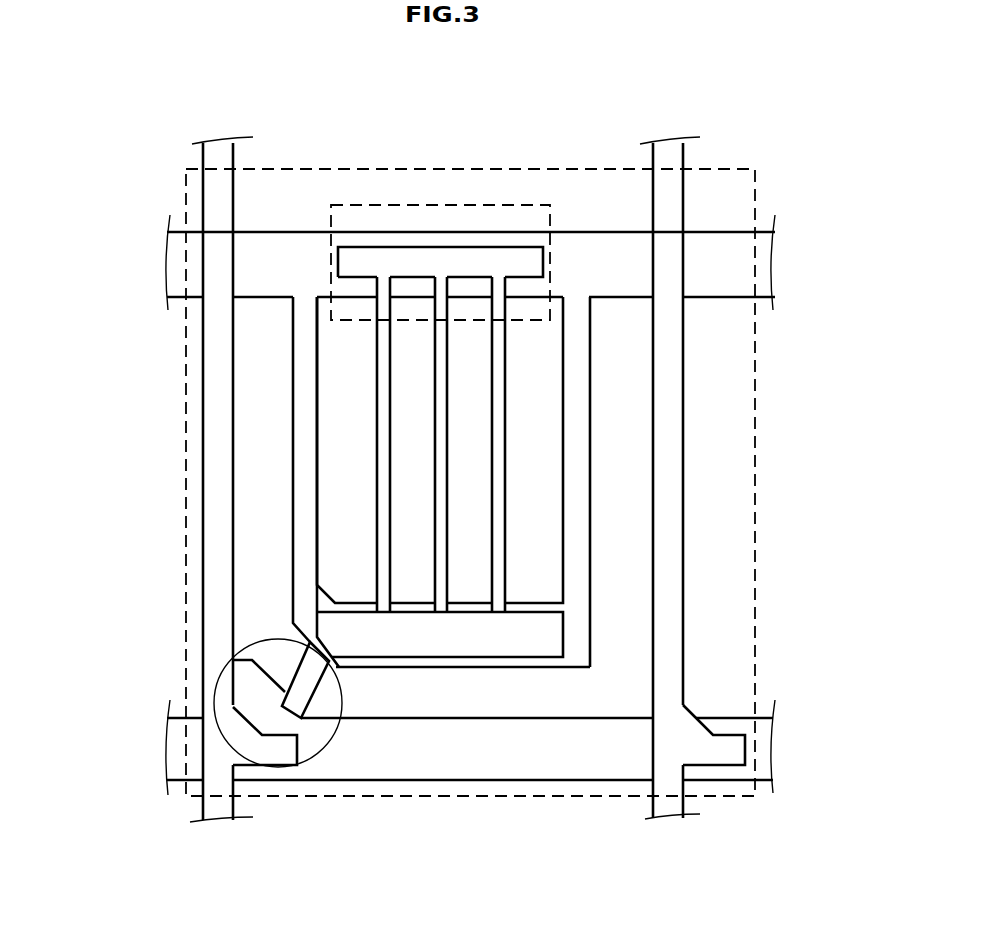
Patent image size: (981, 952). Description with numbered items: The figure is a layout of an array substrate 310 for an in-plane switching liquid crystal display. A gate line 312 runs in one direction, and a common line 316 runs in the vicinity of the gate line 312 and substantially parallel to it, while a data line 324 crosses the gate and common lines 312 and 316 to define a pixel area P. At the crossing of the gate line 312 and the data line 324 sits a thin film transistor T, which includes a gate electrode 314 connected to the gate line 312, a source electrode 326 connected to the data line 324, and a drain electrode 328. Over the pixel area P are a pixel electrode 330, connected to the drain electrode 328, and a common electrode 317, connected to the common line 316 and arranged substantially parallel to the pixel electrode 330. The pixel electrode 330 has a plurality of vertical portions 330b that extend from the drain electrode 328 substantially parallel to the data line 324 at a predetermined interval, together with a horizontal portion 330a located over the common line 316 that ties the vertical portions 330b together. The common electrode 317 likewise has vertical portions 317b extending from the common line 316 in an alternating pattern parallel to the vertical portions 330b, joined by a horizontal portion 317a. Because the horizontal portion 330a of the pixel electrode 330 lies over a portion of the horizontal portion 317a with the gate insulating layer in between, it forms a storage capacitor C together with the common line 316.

The array substrate 310 is at (755, 392).
The gate line 312 is at (530, 763).
The gate electrode 314 is at (243, 685).
The common line 316 is at (740, 263).
The common electrode 317 is at (627, 484).
The horizontal portion of common electrode 317a is at (578, 640).
The vertical portions of common electrode 317b is at (578, 543).
The data line 324 is at (673, 465).
The source electrode 326 is at (278, 755).
The drain electrode 328 is at (310, 682).
The pixel electrode 330 is at (72, 347).
The horizontal portion of pixel electrode 330a is at (353, 263).
The vertical portions of pixel electrode 330b is at (382, 403).
The storage capacitor C is at (474, 203).
The pixel area P is at (730, 535).
The thin film transistor T is at (266, 640).